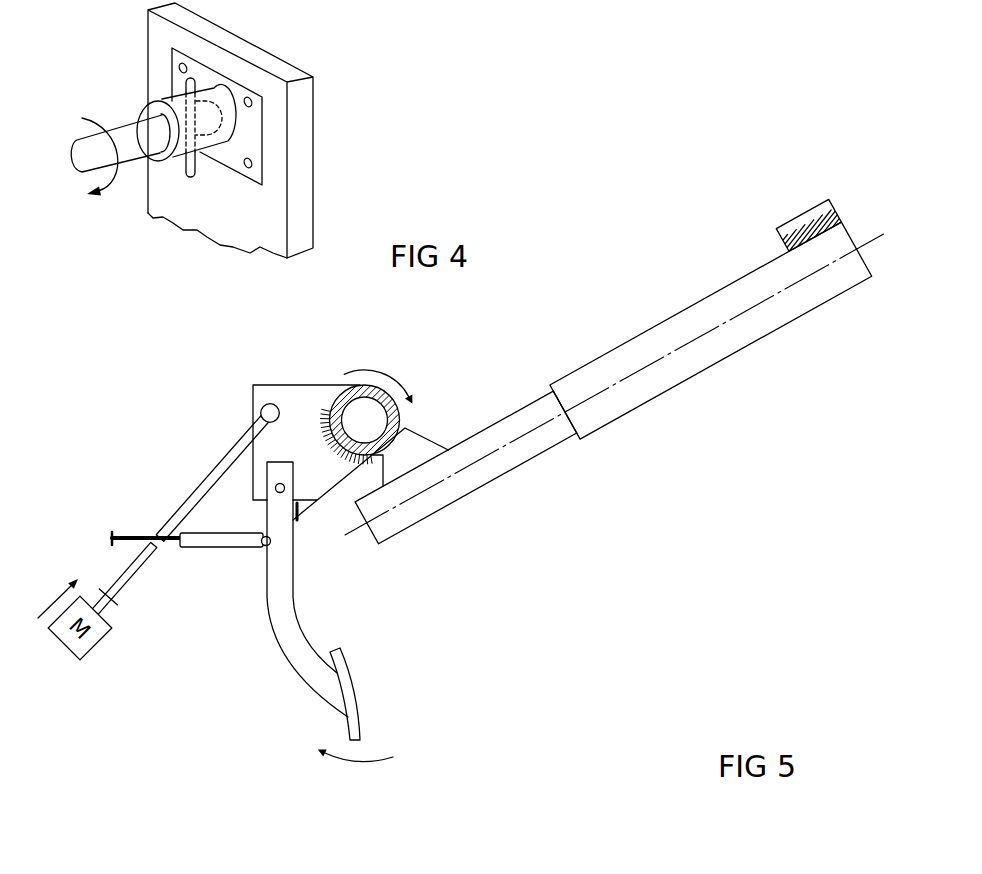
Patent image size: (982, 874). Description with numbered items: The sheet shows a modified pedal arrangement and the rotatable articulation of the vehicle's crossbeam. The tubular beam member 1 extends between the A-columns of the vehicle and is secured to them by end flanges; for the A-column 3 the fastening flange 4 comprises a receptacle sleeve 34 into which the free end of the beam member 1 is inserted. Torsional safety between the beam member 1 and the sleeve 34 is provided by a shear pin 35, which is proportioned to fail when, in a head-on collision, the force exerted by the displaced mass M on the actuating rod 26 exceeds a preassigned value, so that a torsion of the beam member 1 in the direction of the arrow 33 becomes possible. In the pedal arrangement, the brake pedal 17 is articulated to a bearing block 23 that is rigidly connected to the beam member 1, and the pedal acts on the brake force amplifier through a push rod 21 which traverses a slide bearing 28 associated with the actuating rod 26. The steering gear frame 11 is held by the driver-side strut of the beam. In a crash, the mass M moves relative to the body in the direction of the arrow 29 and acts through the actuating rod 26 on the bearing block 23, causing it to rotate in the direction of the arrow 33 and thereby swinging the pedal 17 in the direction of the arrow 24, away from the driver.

In FIG. 4, the tubular beam member 1 is at (133, 137).
In FIG. 5, the tubular beam member 1 is at (345, 397).
In FIG. 4, the right-hand A-column 3 is at (265, 205).
In FIG. 4, the fastening flange 4 is at (246, 148).
In FIG. 5, the steering gear frame 11 is at (797, 221).
In FIG. 5, the brake pedal 17 is at (288, 633).
In FIG. 5, the push rod 21 is at (205, 539).
In FIG. 5, the bearing block 23 is at (297, 412).
In FIG. 5, the arrow 24 is at (363, 760).
In FIG. 5, the actuating rod 26 is at (230, 453).
In FIG. 5, the slide bearing 28 is at (154, 528).
In FIG. 5, the arrow 29 is at (48, 598).
In FIG. 4, the arrow 33 is at (113, 148).
In FIG. 5, the arrow 33 is at (382, 372).
In FIG. 4, the receptacle sleeve 34 is at (228, 122).
In FIG. 4, the shear pin 35 is at (190, 85).